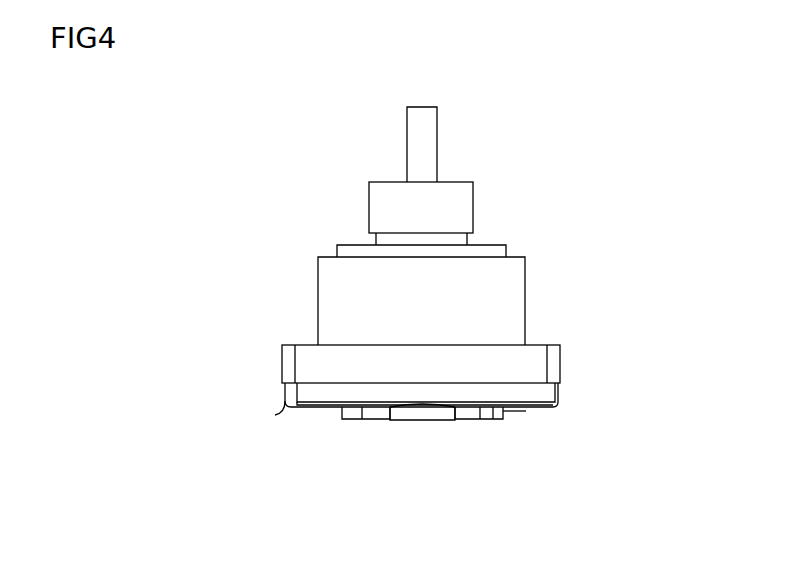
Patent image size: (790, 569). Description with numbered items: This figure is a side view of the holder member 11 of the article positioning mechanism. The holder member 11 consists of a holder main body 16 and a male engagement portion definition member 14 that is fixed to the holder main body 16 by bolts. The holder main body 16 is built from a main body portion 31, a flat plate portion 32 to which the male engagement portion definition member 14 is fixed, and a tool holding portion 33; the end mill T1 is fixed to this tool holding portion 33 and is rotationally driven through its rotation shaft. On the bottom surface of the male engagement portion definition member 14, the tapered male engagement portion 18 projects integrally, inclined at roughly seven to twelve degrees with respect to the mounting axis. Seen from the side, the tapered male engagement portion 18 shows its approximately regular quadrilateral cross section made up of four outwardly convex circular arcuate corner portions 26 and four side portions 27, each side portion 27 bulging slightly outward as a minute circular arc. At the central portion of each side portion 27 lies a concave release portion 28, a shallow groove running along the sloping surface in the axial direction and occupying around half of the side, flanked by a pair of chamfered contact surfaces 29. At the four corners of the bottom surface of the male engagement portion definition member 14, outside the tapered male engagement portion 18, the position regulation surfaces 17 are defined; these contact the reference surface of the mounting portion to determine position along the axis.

The holder member 11 is at (602, 188).
The holder main body 16 is at (520, 167).
The end mill T1 is at (428, 125).
The tool holding portion 33 is at (457, 214).
The main body portion 31 is at (525, 301).
The flat plate portion 32 is at (560, 366).
The male engagement portion definition member 14 is at (563, 397).
The position regulation surface 17 is at (284, 411).
The tapered male engagement portion 18 is at (351, 421).
The side portion 27 is at (476, 482).
The concave release portion 28 is at (423, 413).
The contact surface 29 is at (467, 413).
The circular arcuate corner portion 26 is at (488, 414).